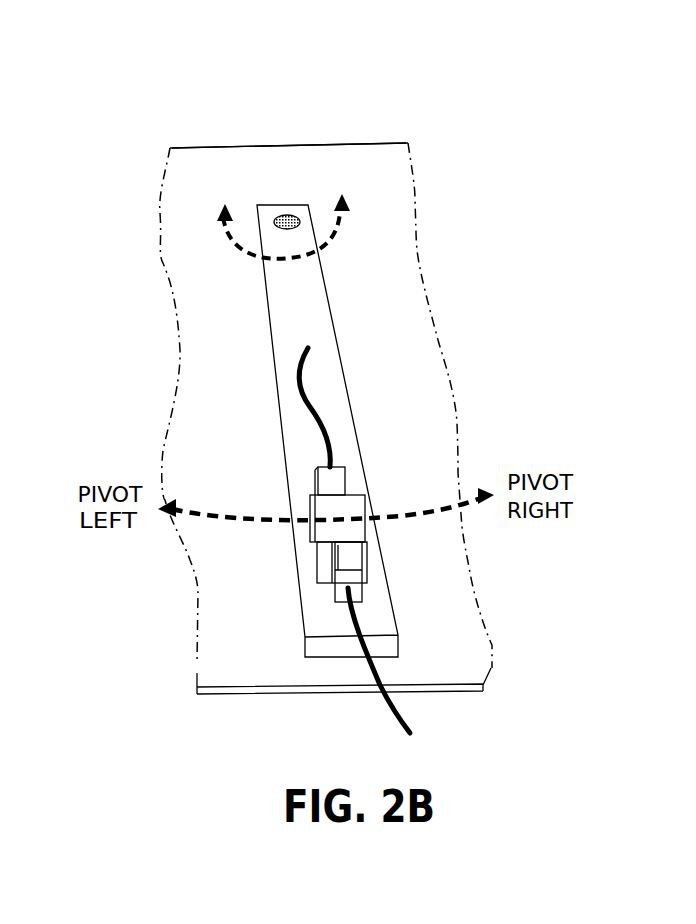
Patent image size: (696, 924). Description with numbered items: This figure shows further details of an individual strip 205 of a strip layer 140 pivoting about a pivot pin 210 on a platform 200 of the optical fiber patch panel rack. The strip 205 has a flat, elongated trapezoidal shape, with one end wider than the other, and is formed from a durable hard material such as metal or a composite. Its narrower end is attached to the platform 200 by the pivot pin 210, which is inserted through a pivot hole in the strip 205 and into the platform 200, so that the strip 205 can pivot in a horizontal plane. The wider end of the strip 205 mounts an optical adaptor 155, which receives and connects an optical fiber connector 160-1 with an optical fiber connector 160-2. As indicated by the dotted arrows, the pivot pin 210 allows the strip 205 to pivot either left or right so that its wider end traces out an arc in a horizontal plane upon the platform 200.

The strip layer 140 is at (497, 188).
The platform 200 is at (384, 131).
The strip 205 is at (255, 333).
The pivot pin 210 is at (283, 196).
The optical fiber connector 160-2 is at (362, 487).
The optical adaptor 155 is at (299, 554).
The optical fiber connector 160-1 is at (382, 572).